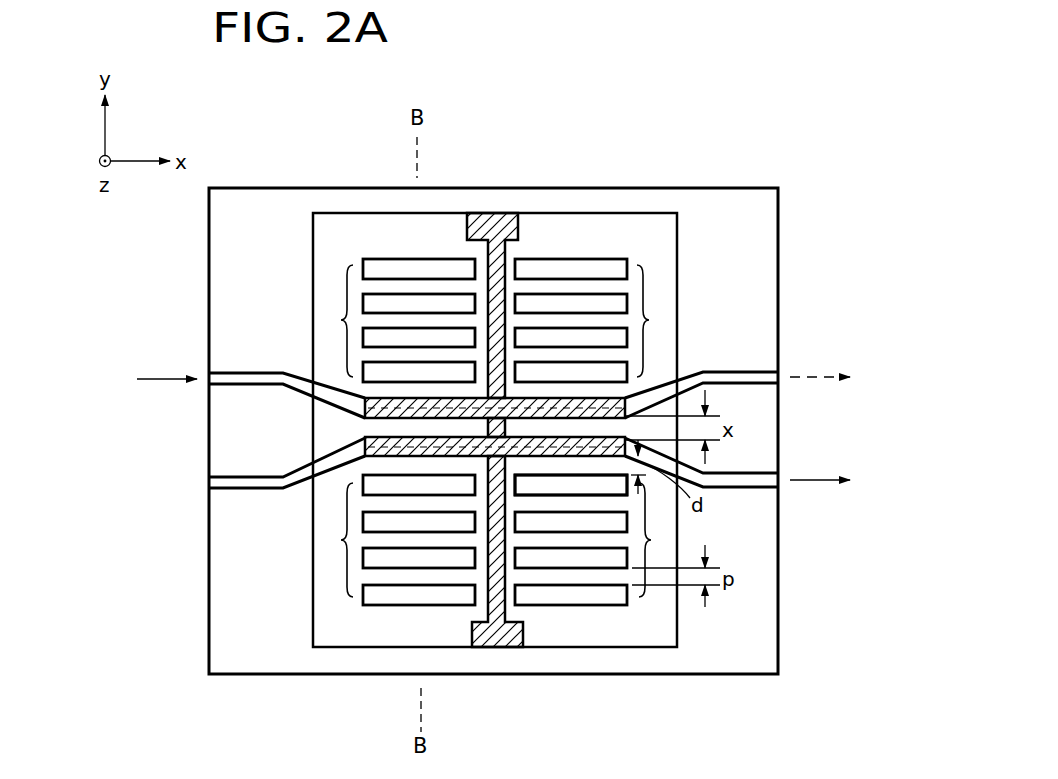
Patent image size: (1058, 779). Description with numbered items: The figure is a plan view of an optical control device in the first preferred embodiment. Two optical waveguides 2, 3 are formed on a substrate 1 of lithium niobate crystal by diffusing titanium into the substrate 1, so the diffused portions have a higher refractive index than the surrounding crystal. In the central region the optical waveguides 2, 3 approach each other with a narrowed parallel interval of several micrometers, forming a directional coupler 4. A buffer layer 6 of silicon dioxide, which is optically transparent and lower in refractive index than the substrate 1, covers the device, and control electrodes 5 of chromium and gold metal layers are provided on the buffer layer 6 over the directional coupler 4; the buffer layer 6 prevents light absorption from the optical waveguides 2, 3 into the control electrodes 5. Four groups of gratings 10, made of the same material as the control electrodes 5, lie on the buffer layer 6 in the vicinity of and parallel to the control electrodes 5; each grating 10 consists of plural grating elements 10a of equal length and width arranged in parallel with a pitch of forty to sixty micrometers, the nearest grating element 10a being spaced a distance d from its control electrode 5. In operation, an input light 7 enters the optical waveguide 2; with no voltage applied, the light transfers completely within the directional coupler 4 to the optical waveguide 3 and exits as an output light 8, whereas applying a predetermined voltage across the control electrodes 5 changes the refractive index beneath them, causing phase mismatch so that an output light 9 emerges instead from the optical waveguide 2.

The substrate 1 is at (718, 205).
The optical waveguide 2 is at (262, 375).
The optical waveguide 3 is at (255, 483).
The directional coupler 4 is at (455, 430).
The control electrode 5 is at (540, 437).
The buffer layer 6 is at (652, 628).
The input light 7 is at (162, 378).
The output light 8 is at (815, 478).
The output light 9 is at (815, 375).
The grating 10 is at (341, 320).
The grating element 10a is at (588, 488).